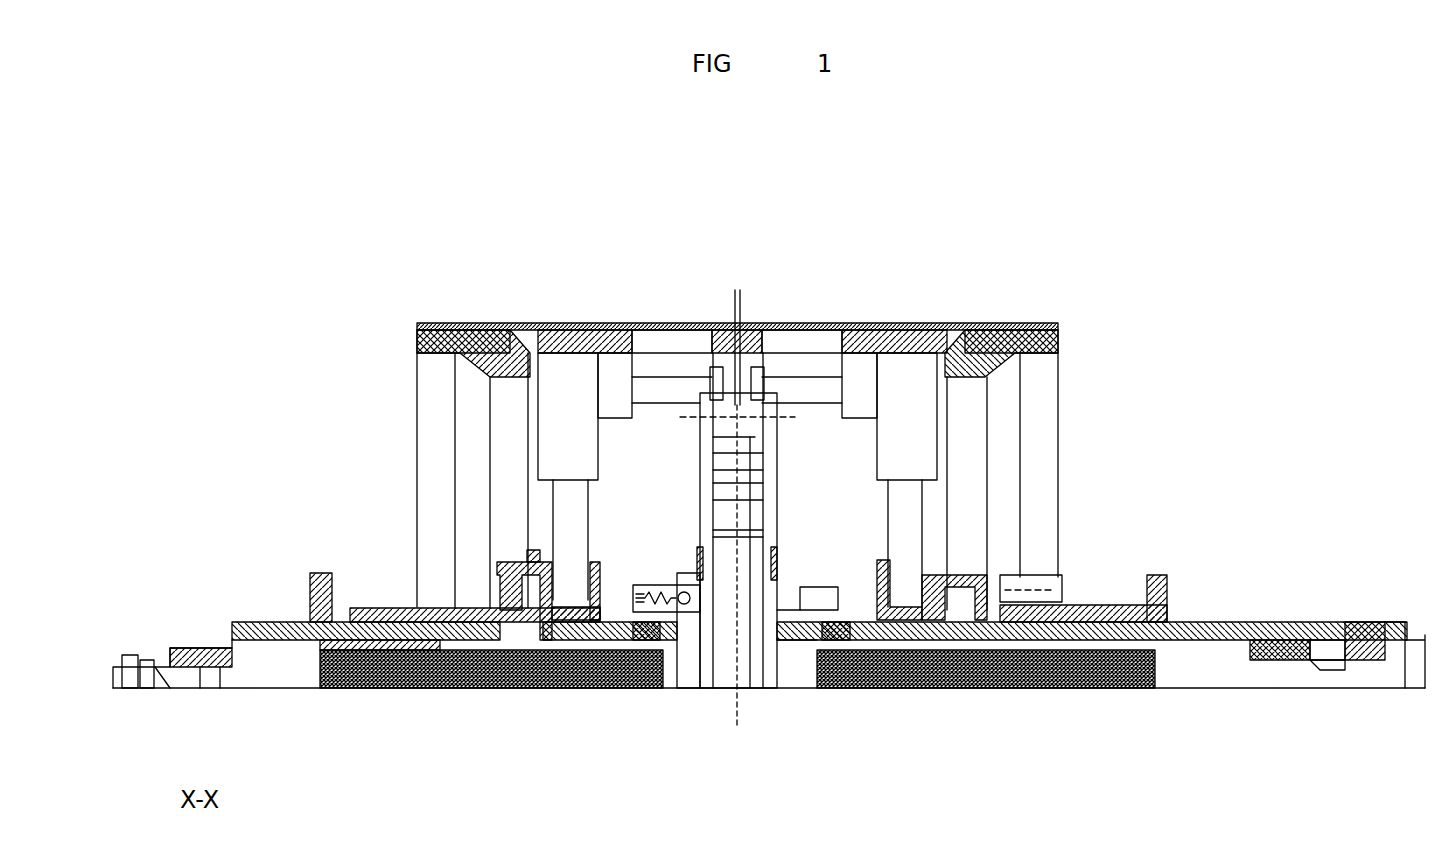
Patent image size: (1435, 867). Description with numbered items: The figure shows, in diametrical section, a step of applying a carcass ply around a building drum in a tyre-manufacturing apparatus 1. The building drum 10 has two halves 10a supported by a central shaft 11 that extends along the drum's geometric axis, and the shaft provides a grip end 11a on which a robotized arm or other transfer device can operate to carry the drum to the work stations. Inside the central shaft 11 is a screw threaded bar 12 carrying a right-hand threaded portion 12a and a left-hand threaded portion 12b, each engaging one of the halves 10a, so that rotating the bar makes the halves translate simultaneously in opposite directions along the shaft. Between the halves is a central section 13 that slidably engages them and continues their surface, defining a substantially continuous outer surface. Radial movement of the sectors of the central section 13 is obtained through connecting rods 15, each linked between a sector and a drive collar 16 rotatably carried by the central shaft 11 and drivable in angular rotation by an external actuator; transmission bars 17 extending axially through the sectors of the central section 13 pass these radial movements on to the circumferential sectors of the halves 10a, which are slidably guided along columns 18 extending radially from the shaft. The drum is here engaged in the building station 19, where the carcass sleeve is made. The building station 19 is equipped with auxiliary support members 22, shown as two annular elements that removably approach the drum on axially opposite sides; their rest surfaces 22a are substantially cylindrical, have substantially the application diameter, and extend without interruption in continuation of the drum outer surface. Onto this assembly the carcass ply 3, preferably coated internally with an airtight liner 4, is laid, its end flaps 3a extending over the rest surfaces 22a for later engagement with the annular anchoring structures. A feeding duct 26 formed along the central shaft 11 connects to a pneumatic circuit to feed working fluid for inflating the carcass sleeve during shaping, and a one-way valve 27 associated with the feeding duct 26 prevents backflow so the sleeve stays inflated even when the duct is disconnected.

The apparatus 1 is at (1228, 250).
The carcass ply 3 is at (883, 323).
The end flaps 3a is at (467, 330).
The liner 4 is at (810, 323).
The building drum 10 is at (688, 690).
The halves 10a is at (527, 330).
The central shaft 11 is at (257, 622).
The grip end 11a is at (190, 650).
The screw threaded bar 12 is at (400, 690).
The right-hand threaded portion 12a is at (478, 690).
The left-hand threaded portion 12b is at (995, 690).
The central section 13 is at (727, 323).
The connecting rods 15 is at (713, 470).
The drive collar 16 is at (743, 560).
The transmission bars 17 is at (657, 330).
The columns 18 is at (580, 525).
The building station 19 is at (1150, 470).
The auxiliary support members 22 is at (417, 335).
The rest surfaces 22a is at (417, 323).
The feeding duct 26 is at (745, 655).
The one-way valve 27 is at (635, 615).